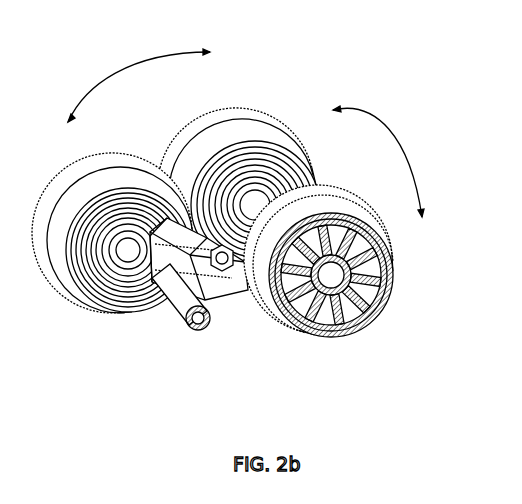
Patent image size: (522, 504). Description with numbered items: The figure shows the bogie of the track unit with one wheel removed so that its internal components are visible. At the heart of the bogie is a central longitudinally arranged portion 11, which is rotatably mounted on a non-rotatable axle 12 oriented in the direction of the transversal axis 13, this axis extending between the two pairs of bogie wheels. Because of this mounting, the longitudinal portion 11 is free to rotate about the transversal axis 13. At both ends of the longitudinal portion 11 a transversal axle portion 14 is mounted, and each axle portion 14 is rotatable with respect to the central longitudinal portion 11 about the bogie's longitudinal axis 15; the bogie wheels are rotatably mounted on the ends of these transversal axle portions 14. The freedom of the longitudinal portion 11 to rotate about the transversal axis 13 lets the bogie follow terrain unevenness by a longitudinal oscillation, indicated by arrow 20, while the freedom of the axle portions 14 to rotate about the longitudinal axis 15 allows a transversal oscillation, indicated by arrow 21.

The central longitudinally arranged portion 11 is at (200, 210).
The non-rotatable axle 12 is at (226, 272).
The transversal axis 13 is at (326, 352).
The transversal axle portion 14 is at (145, 262).
The longitudinal axis 15 is at (62, 305).
The arrow 20 is at (139, 74).
The arrow 21 is at (378, 151).